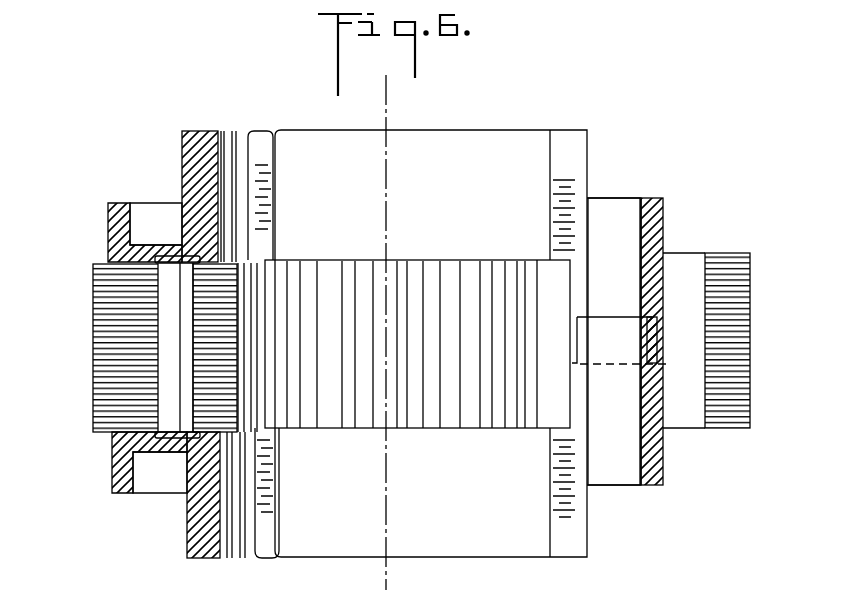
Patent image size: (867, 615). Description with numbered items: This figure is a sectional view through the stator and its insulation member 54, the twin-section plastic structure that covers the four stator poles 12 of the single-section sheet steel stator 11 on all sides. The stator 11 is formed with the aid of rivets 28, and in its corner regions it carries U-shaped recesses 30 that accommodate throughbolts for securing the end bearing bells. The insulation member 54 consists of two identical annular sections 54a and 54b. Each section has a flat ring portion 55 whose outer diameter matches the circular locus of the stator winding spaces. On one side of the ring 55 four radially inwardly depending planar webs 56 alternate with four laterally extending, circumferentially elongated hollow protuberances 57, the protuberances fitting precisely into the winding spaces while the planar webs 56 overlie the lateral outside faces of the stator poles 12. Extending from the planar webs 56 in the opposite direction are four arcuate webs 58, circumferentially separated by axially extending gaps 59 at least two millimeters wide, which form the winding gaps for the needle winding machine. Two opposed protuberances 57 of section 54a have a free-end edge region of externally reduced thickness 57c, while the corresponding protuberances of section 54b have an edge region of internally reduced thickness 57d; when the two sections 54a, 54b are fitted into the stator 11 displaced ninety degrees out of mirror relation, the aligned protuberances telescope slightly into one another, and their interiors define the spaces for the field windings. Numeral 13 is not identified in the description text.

The stator 11 is at (436, 252).
The stator poles 12 is at (545, 428).
The rotor laminations 13 is at (348, 433).
The rivets 28 is at (168, 373).
The U-shaped recesses 30 is at (700, 257).
The insulation member 54 is at (197, 563).
The insulator section 54a is at (666, 463).
The insulator section 54b is at (675, 221).
The flat ring portion 55 is at (110, 228).
The planar webs 56 is at (160, 243).
The hollow protuberances 57 is at (622, 208).
The circumferential edge region of externally reduced thickness 57c is at (660, 327).
The circumferential edge region of internally reduced thickness 57d is at (660, 331).
The arcuate webs 58 is at (305, 543).
The axially extending gaps 59 is at (253, 128).